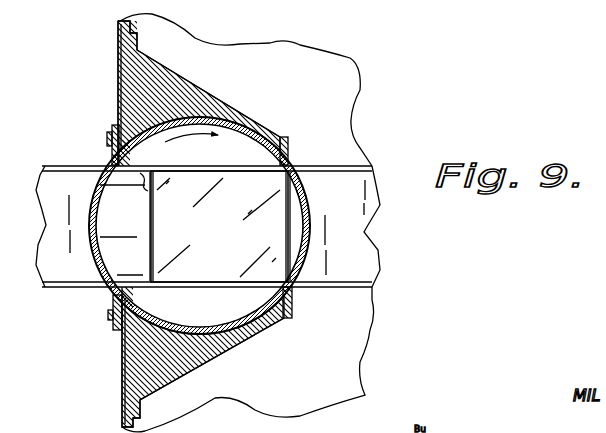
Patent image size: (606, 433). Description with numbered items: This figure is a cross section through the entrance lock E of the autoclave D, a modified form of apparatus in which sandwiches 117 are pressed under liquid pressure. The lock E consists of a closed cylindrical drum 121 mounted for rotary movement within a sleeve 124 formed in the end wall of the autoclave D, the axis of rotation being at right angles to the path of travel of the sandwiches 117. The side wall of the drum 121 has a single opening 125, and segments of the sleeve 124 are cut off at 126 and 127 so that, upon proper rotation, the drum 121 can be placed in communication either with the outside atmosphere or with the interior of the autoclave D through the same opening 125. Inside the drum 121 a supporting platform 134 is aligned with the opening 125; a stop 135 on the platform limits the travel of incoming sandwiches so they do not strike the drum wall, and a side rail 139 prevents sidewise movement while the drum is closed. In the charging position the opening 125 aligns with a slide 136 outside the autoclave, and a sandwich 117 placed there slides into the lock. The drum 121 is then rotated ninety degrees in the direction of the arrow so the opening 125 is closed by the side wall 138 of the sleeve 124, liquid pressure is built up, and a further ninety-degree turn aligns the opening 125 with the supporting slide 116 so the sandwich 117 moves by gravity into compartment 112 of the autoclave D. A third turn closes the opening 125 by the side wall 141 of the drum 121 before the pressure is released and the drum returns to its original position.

The compartment 112 is at (262, 60).
The sleeve 124 is at (133, 69).
The cut-off segment of sleeve 126 is at (110, 152).
The cut-off segment of sleeve 127 is at (290, 147).
The supporting platform 134 is at (153, 167).
The side wall of sleeve 138 is at (232, 128).
The drum 121 is at (296, 176).
The side wall of drum 141 is at (213, 327).
The supporting slide 116 is at (363, 230).
The slide 136 is at (58, 260).
The opening 125 is at (86, 205).
The stop 135 is at (287, 229).
The sandwich 117 is at (161, 259).
The side rail 139 is at (146, 172).
The autoclave D is at (117, 44).
The lock E is at (107, 301).